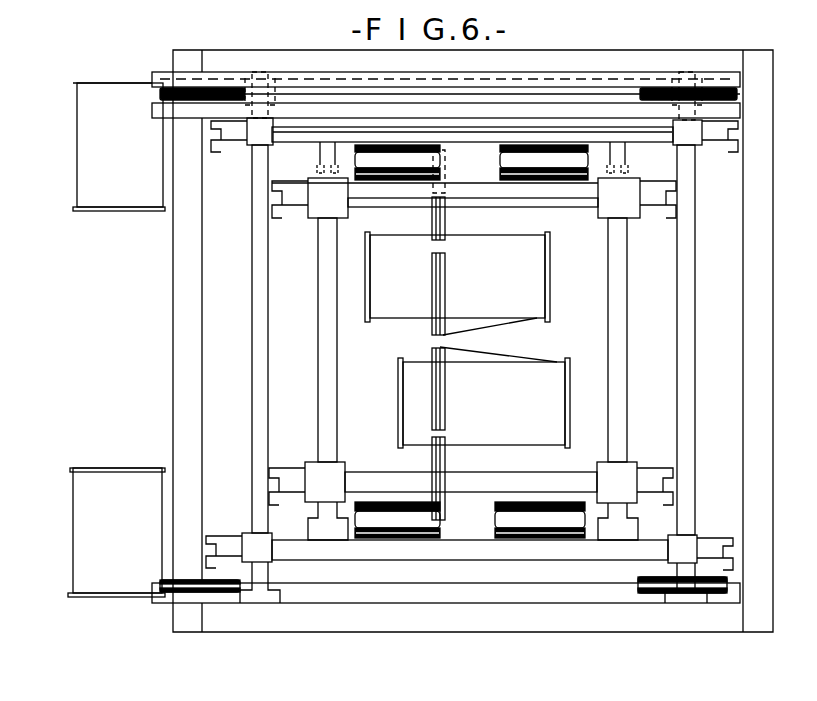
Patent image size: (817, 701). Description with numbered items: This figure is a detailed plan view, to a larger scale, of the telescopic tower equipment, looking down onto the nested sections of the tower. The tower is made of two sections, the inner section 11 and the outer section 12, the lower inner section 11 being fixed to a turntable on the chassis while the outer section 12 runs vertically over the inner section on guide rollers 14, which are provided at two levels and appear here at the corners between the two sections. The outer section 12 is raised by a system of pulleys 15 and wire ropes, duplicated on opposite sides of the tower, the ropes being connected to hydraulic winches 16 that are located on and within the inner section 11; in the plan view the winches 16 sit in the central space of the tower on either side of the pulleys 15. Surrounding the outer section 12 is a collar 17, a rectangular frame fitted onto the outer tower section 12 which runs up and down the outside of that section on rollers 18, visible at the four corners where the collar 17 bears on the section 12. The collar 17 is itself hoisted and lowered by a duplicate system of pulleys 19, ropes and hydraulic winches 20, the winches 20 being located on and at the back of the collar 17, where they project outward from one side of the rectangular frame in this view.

The inner tower section 11 is at (617, 425).
The outer tower section 12 is at (688, 338).
The guide rollers 14 is at (293, 190).
The pulleys 15 is at (440, 305).
The hydraulic winches 16 is at (479, 290).
The collar 17 is at (657, 68).
The rollers 18 is at (260, 75).
The pulleys 19 is at (700, 95).
The hydraulic winches 20 is at (107, 165).